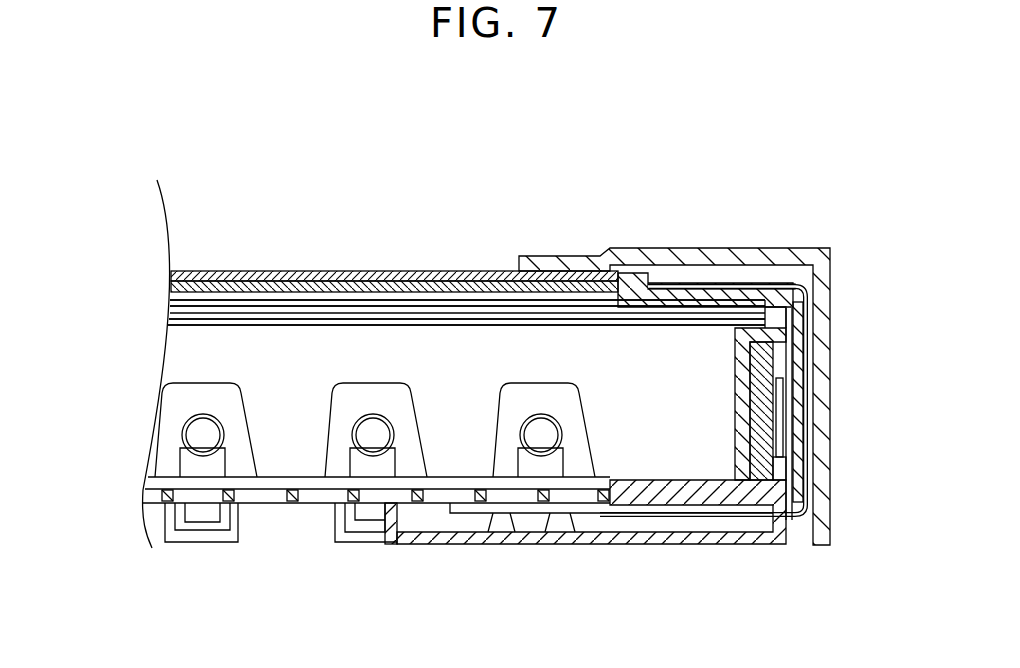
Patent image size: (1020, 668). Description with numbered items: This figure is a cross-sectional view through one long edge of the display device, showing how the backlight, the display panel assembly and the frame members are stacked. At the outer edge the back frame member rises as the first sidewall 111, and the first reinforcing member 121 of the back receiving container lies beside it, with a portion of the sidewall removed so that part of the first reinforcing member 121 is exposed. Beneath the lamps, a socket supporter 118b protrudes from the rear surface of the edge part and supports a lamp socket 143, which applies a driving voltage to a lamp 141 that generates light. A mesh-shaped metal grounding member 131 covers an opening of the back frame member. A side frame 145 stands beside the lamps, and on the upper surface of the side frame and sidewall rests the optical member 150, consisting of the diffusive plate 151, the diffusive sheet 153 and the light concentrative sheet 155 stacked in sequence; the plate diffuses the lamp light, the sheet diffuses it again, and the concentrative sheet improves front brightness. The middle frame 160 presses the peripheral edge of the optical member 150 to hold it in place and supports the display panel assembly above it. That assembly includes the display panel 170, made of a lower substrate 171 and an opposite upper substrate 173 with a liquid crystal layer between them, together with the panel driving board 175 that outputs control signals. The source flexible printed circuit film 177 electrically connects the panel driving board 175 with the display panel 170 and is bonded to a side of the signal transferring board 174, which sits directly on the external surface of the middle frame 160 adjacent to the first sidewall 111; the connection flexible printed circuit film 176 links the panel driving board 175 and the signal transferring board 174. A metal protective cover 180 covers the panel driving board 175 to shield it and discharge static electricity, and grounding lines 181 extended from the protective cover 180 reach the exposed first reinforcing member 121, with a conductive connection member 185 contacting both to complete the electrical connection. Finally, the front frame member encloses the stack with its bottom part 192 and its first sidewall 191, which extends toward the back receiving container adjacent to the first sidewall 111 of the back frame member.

The first sidewall 111 is at (765, 355).
The socket supporter 118b is at (200, 537).
The first reinforcing member 121 is at (779, 372).
The grounding member 131 is at (291, 503).
The lamp 141 is at (183, 423).
The lamp socket 143 is at (187, 458).
The side frame 145 is at (188, 357).
The optical member 150 is at (98, 280).
The diffusive plate 151 is at (168, 321).
The diffusive sheet 153 is at (170, 313).
The light concentrative sheet 155 is at (171, 302).
The middle frame 160 is at (787, 291).
The display panel 170 is at (410, 197).
The lower substrate 171 is at (354, 288).
The upper substrate 173 is at (405, 277).
The signal transferring board 174 is at (798, 400).
The panel driving board 175 is at (462, 510).
The connection flexible printed circuit film 176 is at (812, 513).
The source flexible printed circuit film 177 is at (808, 325).
The protective cover 180 is at (665, 540).
The grounding line 181 is at (780, 472).
The conductive connection member 185 is at (789, 440).
The first sidewall of front frame member 191 is at (831, 268).
The bottom part of front frame member 192 is at (807, 248).